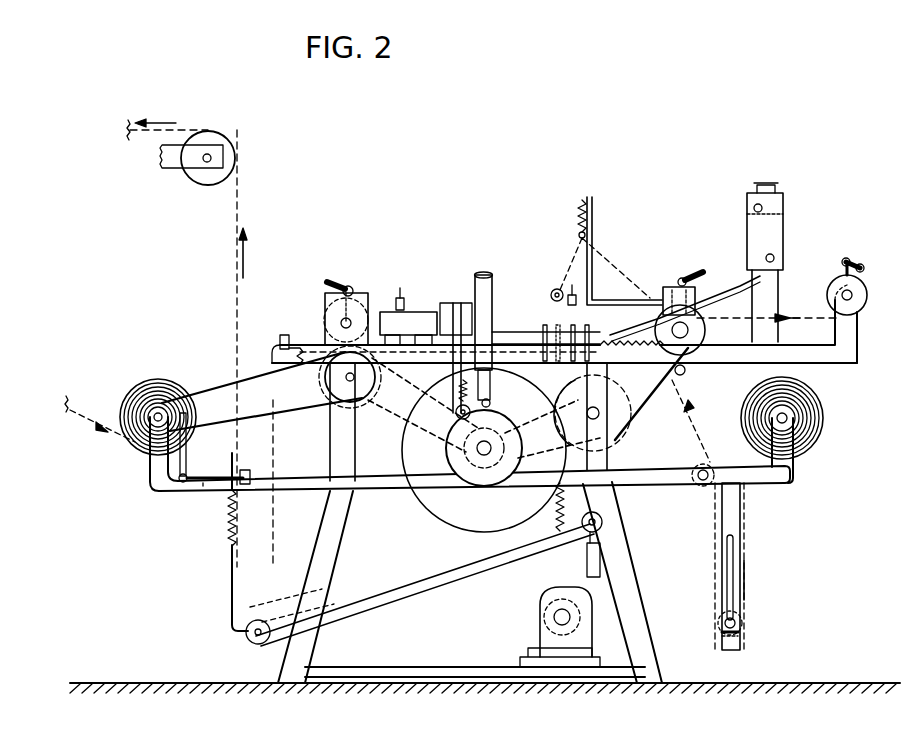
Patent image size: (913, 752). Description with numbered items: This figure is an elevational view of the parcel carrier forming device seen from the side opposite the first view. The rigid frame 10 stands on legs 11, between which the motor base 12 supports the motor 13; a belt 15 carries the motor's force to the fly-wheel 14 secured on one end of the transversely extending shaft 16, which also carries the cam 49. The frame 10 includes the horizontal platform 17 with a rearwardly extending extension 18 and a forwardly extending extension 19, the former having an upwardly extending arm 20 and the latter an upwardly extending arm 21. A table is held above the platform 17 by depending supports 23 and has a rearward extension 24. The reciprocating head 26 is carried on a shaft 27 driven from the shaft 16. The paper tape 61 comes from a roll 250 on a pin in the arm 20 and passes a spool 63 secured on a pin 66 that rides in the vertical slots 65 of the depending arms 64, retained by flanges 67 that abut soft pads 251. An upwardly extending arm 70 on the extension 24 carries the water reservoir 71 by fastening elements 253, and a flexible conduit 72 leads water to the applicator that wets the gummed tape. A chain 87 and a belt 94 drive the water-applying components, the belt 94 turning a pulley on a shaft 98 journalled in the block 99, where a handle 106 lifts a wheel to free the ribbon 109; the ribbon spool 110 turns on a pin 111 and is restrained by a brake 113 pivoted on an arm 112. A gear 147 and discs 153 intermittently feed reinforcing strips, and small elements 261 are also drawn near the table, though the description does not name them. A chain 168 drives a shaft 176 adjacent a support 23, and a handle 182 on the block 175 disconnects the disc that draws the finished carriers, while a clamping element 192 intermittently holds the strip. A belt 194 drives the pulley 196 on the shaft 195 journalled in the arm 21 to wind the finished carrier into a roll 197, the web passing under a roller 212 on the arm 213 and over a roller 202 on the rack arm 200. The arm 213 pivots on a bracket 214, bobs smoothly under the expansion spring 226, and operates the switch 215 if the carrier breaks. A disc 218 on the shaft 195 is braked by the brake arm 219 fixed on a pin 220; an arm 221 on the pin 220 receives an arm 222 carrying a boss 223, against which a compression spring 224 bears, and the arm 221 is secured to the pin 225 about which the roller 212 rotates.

The frame 10 is at (636, 646).
The legs 11 is at (318, 552).
The motor support or base 12 is at (449, 666).
The motor 13 is at (518, 658).
The fly-wheel 14 is at (431, 500).
The belt 15 is at (491, 555).
The shaft 16 is at (470, 447).
The platform 17 is at (389, 488).
The rearwardly extending extension 18 is at (680, 484).
The forwardly extending extension 19 is at (215, 492).
The upwardly extending arm 20 is at (788, 448).
The upwardly extending arm 21 is at (150, 482).
The supports or depending frame members 23 is at (335, 447).
The rearward extension 24 is at (739, 352).
The reciprocating head or tool holder 26 is at (475, 296).
The shaft 27 is at (492, 288).
The cam 49 is at (490, 474).
The paper tape 61 is at (746, 588).
The spool 63 is at (742, 620).
The depending arms 64 is at (738, 526).
The elongated vertical slots 65 is at (731, 560).
The pin 66 is at (736, 623).
The flanges 67 is at (723, 633).
The upwardly extending arm 70 is at (779, 291).
The water reservoir 71 is at (785, 193).
The flexible conduit 72 is at (720, 298).
The chain 87 is at (530, 420).
The belt 94 is at (636, 400).
The shaft 98 is at (688, 333).
The block 99 is at (666, 286).
The handle 106 is at (703, 270).
The ribbon 109 is at (636, 282).
The spool 110 is at (856, 308).
The pin 111 is at (849, 300).
The upwardly extending arm 112 is at (840, 268).
The brake 113 is at (849, 256).
The gear 147 is at (558, 352).
The discs 153 is at (556, 288).
The chain 168 is at (376, 406).
The block 175 is at (363, 292).
The shaft 176 is at (355, 377).
The handle 182 is at (328, 280).
The clamping element 192 is at (283, 334).
The belt 194 is at (236, 330).
The shaft 195 is at (154, 415).
The pulley 196 is at (143, 446).
The roll 197 is at (240, 216).
The extension or arm 200 is at (176, 160).
The roller 202 is at (210, 180).
The roller 212 is at (250, 608).
The arm 213 is at (384, 598).
The bracket 214 is at (602, 522).
The switch 215 is at (598, 578).
The disc 218 is at (190, 405).
The brake arm 219 is at (188, 462).
The pin 220 is at (192, 482).
The arm 221 is at (204, 486).
The arm 222 is at (230, 586).
The boss 223 is at (236, 542).
The compression spring 224 is at (236, 470).
The pin 225 is at (250, 634).
The expansion spring 226 is at (556, 546).
The roll 250 is at (818, 420).
The compressible boss or pad 251 is at (740, 634).
The fastening elements 253 is at (766, 254).
The stop 261 is at (573, 296).